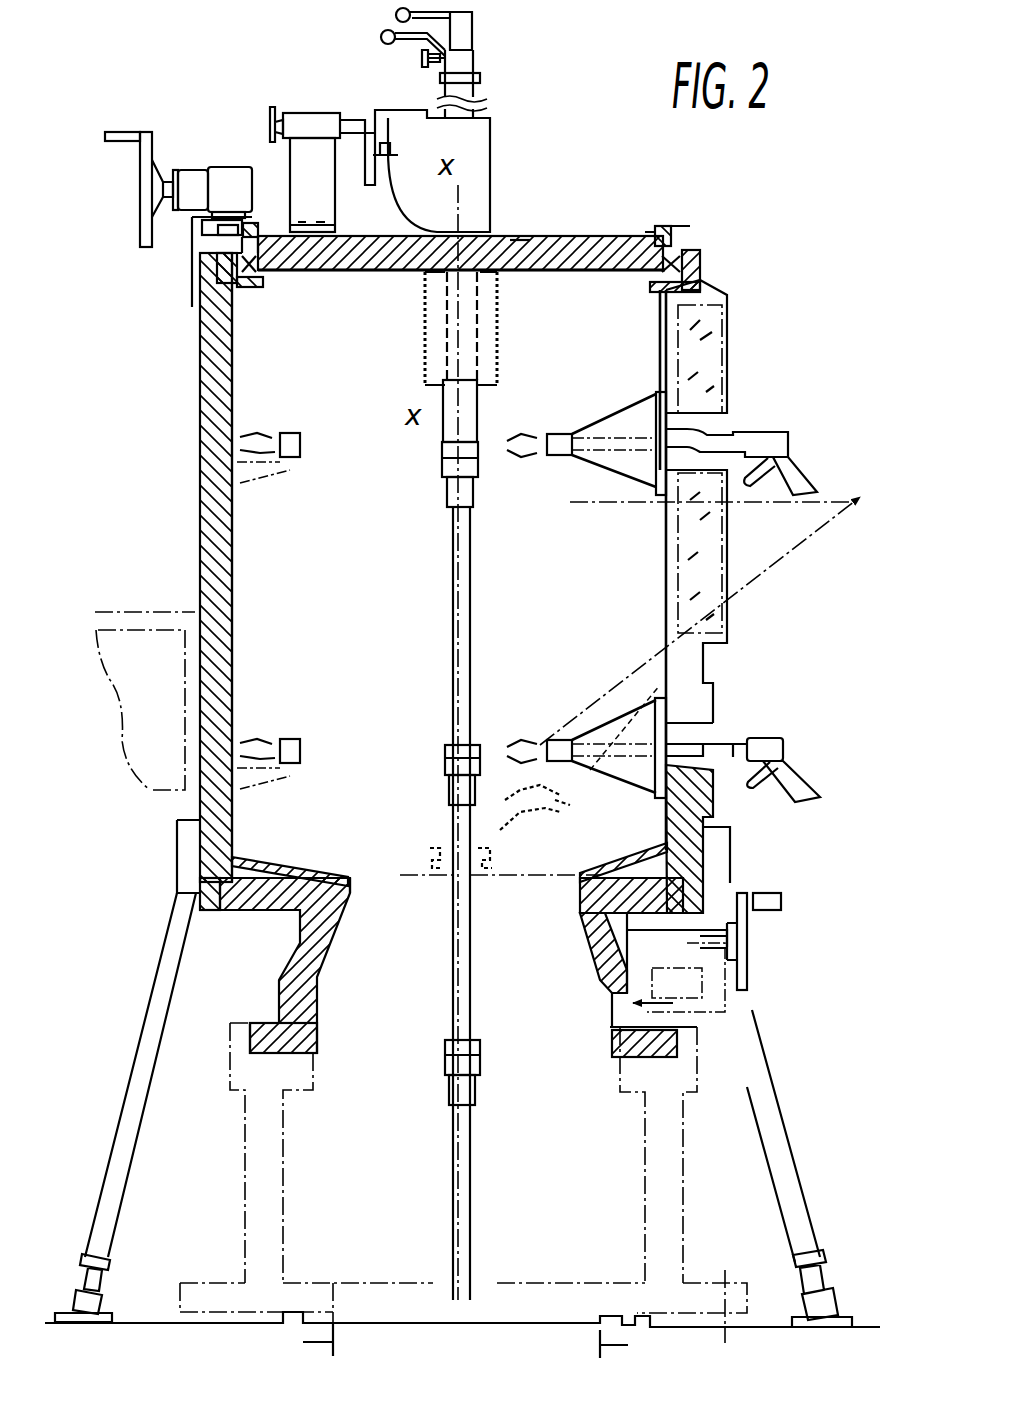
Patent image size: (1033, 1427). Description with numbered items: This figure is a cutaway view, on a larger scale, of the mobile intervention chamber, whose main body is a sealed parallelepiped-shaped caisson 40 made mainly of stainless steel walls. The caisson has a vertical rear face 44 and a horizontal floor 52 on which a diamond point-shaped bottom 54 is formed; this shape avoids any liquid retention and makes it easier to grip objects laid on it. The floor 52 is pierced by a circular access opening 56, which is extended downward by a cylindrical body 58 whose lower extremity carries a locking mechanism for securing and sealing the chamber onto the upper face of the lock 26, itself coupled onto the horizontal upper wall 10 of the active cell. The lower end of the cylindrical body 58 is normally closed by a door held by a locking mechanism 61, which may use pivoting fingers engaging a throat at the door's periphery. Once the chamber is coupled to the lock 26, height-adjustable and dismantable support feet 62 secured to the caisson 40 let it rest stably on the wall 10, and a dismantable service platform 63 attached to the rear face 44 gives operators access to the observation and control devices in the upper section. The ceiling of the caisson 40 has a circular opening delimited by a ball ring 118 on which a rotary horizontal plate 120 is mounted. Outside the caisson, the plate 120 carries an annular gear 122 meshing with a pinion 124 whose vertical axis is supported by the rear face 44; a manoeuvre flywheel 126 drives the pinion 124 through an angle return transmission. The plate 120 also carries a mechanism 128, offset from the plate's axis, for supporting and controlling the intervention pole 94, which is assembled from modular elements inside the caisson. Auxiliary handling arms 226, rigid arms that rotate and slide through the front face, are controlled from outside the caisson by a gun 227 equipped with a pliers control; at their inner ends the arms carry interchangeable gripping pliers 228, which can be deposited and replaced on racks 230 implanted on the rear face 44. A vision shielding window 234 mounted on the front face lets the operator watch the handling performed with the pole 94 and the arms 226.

The horizontal upper wall 10 is at (143, 1332).
The lock 26 is at (690, 1205).
The sealed caisson 40 is at (198, 365).
The vertical rear face 44 is at (212, 446).
The horizontal floor 52 is at (258, 905).
The diamond point-shaped bottom 54 is at (290, 860).
The circular access opening 56 is at (352, 888).
The cylindrical body 58 is at (308, 1030).
The locking mechanism 61 is at (748, 968).
The support feet 62 is at (112, 1140).
The service platform 63 is at (148, 622).
The intervention pole 94 is at (440, 578).
The ball ring 118 is at (702, 262).
The rotary horizontal plate 120 is at (612, 240).
The annular gear 122 is at (676, 232).
The pinion 124 is at (218, 227).
The manoeuvre flywheel 126 is at (165, 115).
The supporting and controlling mechanism 128 is at (512, 207).
The auxiliary handling arms 226 is at (753, 428).
The spray gun handle 227 is at (798, 470).
The interchangeable gripping pliers 228 is at (545, 430).
The racks 230 is at (268, 475).
The vision shielding window 234 is at (722, 330).